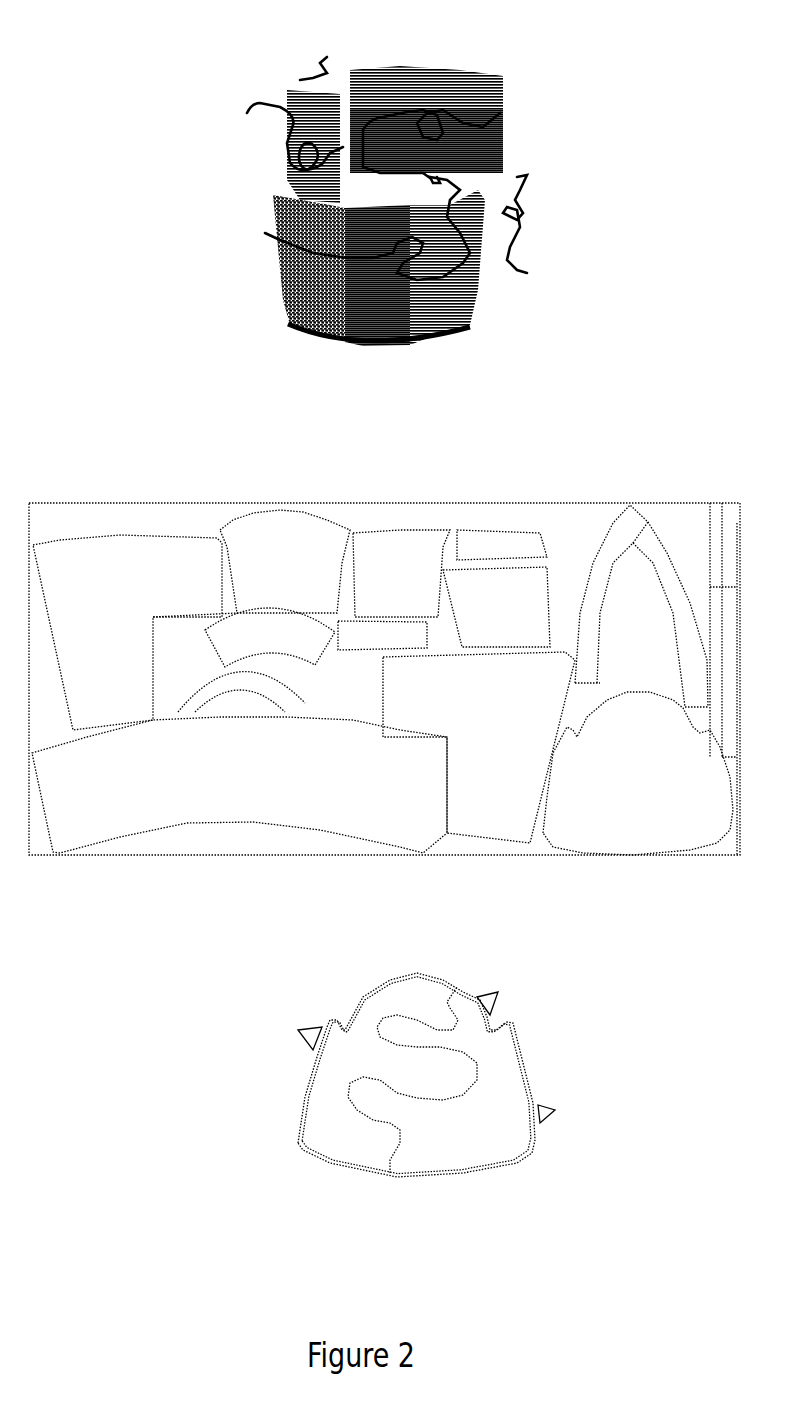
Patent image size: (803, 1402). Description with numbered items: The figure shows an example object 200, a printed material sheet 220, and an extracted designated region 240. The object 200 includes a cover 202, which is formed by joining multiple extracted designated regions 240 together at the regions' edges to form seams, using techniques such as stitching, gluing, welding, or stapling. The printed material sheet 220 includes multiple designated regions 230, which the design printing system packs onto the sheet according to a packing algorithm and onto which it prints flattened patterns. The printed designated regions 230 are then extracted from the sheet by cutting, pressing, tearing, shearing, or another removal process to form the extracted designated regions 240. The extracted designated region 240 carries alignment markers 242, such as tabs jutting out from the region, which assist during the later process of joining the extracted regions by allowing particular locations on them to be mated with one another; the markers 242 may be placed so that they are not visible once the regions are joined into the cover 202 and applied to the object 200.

The object 200 is at (570, 55).
The cover 202 is at (328, 300).
The printed material sheet 220 is at (118, 853).
The designated regions 230 is at (117, 597).
The extracted designated region 240 is at (322, 1163).
The alignment markers 242 is at (482, 995).